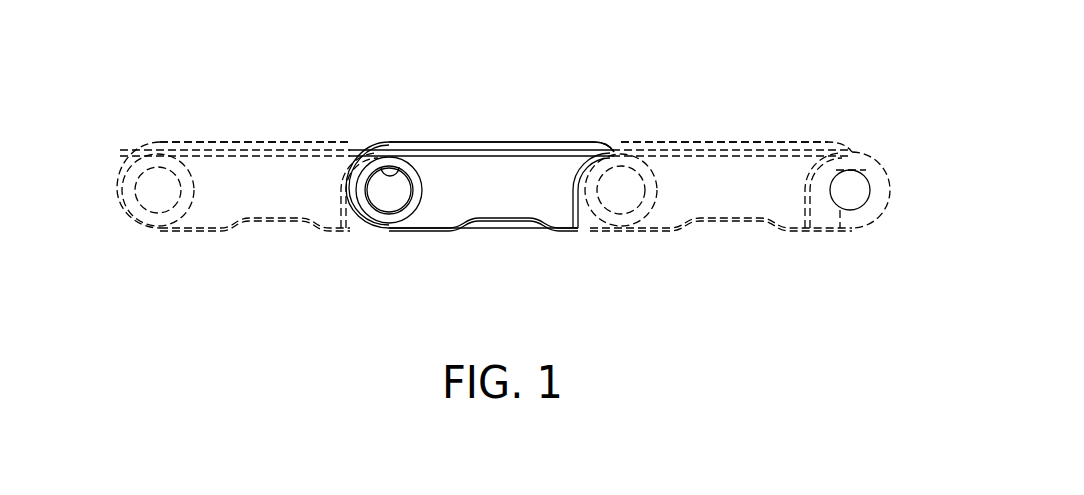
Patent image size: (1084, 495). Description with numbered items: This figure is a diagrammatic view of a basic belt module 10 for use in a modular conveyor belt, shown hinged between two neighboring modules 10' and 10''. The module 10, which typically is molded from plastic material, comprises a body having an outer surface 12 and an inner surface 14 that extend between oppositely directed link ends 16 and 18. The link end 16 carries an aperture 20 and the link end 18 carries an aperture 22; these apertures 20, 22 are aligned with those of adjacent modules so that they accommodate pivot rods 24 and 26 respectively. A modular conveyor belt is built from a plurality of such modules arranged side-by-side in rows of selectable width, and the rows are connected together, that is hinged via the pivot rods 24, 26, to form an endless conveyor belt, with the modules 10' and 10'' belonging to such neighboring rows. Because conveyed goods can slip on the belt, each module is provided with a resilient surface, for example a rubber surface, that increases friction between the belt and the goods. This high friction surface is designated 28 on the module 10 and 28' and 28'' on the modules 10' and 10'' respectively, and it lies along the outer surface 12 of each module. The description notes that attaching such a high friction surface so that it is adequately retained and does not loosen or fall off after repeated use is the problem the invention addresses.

The belt module 10 is at (480, 129).
The belt module 10' is at (247, 134).
The belt module 10'' is at (740, 142).
The outer surface 12 is at (551, 156).
The inner surface 14 is at (458, 229).
The link end 16 is at (413, 220).
The link end 18 is at (556, 214).
The aperture 20 is at (387, 158).
The aperture 22 is at (648, 165).
The pivot rod 24 is at (388, 203).
The pivot rod 26 is at (628, 215).
The high friction surface 28 is at (501, 105).
The high friction surface 28' is at (255, 112).
The high friction surface 28'' is at (724, 98).